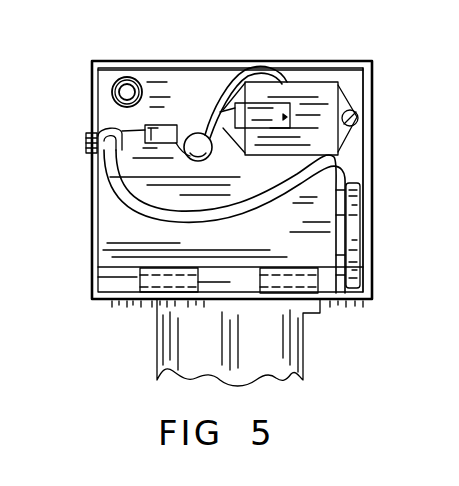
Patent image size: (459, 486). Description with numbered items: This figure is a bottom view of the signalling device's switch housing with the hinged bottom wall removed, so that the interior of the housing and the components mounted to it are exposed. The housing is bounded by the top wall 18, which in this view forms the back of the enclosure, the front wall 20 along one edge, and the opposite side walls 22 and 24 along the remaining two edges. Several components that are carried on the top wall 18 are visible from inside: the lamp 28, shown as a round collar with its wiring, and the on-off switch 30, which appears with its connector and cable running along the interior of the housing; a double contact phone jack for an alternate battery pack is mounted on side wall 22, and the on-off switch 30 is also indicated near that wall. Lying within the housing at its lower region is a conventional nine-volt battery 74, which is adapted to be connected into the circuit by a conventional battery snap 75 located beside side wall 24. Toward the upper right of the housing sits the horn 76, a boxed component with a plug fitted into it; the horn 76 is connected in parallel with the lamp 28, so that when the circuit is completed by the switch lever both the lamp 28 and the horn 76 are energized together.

The top wall 18 is at (150, 82).
The front wall 20 is at (298, 63).
The side wall 22 is at (96, 98).
The side wall 24 is at (367, 107).
The lamp 28 is at (200, 135).
The on-off switch 30 is at (162, 126).
The battery 74 is at (120, 230).
The battery snap 75 is at (358, 228).
The horn 76 is at (323, 90).